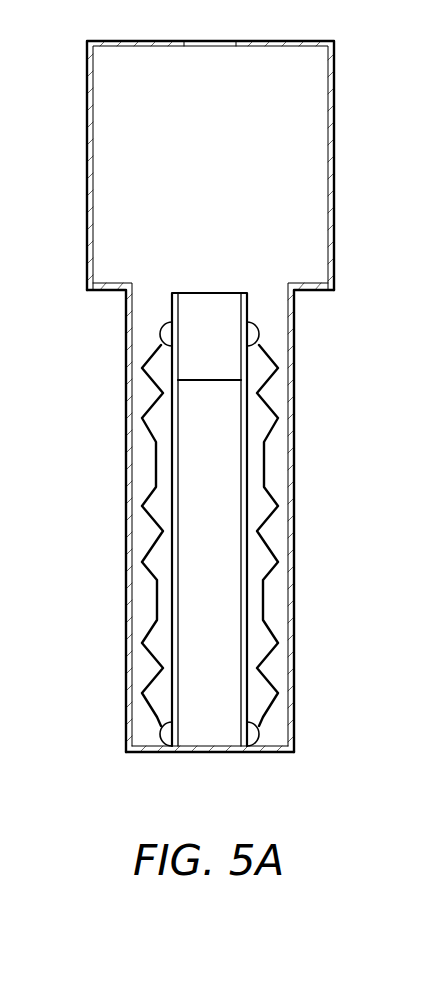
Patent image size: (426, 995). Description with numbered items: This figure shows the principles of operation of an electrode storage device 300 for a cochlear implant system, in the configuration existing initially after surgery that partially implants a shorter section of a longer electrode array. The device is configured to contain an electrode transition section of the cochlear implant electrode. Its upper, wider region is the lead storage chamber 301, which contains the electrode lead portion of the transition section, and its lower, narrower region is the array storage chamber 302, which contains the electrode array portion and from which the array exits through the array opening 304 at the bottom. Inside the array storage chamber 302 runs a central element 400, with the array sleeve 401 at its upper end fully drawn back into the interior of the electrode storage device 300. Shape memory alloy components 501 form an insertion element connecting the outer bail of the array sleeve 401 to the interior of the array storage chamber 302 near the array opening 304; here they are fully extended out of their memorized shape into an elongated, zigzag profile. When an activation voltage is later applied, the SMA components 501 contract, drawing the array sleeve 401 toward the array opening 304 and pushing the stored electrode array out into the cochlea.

The electrode storage device 300 is at (213, 413).
The lead storage chamber 301 is at (87, 95).
The array storage chamber 302 is at (126, 588).
The array opening 304 is at (208, 753).
The central tube 400 is at (241, 555).
The array sleeve 401 is at (210, 300).
The shape memory alloy components 501 is at (156, 463).